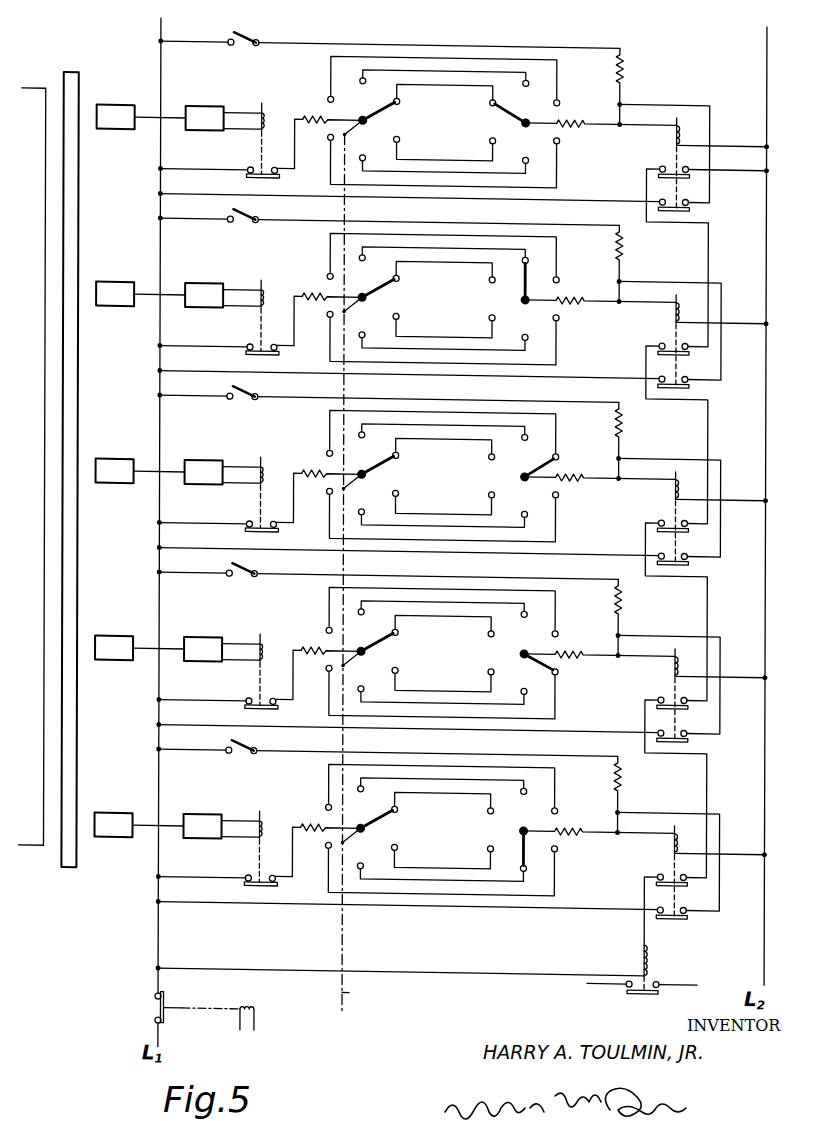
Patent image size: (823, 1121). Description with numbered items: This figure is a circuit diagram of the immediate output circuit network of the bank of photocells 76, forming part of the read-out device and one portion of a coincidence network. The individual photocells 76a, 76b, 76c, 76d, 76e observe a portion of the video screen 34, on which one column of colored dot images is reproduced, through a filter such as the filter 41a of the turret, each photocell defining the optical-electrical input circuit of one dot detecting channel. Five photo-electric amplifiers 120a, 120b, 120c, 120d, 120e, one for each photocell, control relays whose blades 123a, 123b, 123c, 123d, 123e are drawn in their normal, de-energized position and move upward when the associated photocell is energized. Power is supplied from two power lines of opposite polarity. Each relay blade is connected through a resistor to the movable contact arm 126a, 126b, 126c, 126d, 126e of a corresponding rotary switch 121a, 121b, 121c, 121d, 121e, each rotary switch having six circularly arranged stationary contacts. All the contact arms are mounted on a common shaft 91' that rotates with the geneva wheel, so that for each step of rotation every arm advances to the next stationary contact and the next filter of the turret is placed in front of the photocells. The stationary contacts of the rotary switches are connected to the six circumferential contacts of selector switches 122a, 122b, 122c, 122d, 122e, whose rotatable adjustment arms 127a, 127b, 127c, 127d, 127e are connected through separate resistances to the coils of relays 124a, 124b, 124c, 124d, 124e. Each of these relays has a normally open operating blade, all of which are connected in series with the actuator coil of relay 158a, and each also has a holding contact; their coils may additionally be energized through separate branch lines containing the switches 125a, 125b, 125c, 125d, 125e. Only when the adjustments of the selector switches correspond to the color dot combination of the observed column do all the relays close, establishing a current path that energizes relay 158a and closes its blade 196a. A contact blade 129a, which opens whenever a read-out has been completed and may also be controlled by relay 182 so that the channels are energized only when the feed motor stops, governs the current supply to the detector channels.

The video screen 34 is at (33, 676).
The filter 41a is at (72, 762).
The bank of photocells 76 is at (111, 848).
The photocell 76a is at (109, 104).
The photocell 76b is at (140, 278).
The photocell 76c is at (140, 455).
The photocell 76d is at (139, 632).
The photocell 76e is at (138, 809).
The photo-electric amplifier 120a is at (201, 104).
The photo-electric amplifier 120b is at (223, 278).
The photo-electric amplifier 120c is at (223, 455).
The photo-electric amplifier 120d is at (222, 632).
The photo-electric amplifier 120e is at (221, 809).
The relay blade 123a is at (259, 165).
The relay blade 123b is at (229, 317).
The relay blade 123c is at (229, 494).
The relay blade 123d is at (228, 671).
The relay blade 123e is at (228, 848).
The switch 125a is at (250, 31).
The switch 125b is at (389, 212).
The switch 125c is at (388, 389).
The switch 125d is at (388, 566).
The switch 125e is at (387, 743).
The rotary switch 121a is at (380, 100).
The rotary switch 121b is at (430, 299).
The rotary switch 121c is at (429, 476).
The rotary switch 121d is at (429, 653).
The rotary switch 121e is at (428, 830).
The selector switch 122a is at (543, 97).
The selector switch 122b is at (591, 314).
The selector switch 122c is at (591, 491).
The selector switch 122d is at (590, 640).
The selector switch 122e is at (590, 817).
The movable contact arm 126a is at (383, 112).
The movable contact arm 126b is at (394, 292).
The movable contact arm 126c is at (394, 469).
The movable contact arm 126d is at (394, 646).
The movable contact arm 126e is at (393, 823).
The rotatable adjustment arm 127a is at (520, 114).
The rotatable adjustment arm 127b is at (489, 284).
The rotatable adjustment arm 127c is at (504, 470).
The rotatable adjustment arm 127d is at (503, 655).
The rotatable adjustment arm 127e is at (487, 841).
The relay 124a is at (658, 146).
The relay 124b is at (463, 371).
The relay 124c is at (462, 548).
The relay 124d is at (462, 725).
The relay 124e is at (462, 848).
The relay 158a is at (657, 951).
The blade 196a is at (647, 978).
The contact blade 129a is at (168, 1004).
The relay 182 is at (257, 1002).
The common shaft 91' is at (364, 997).